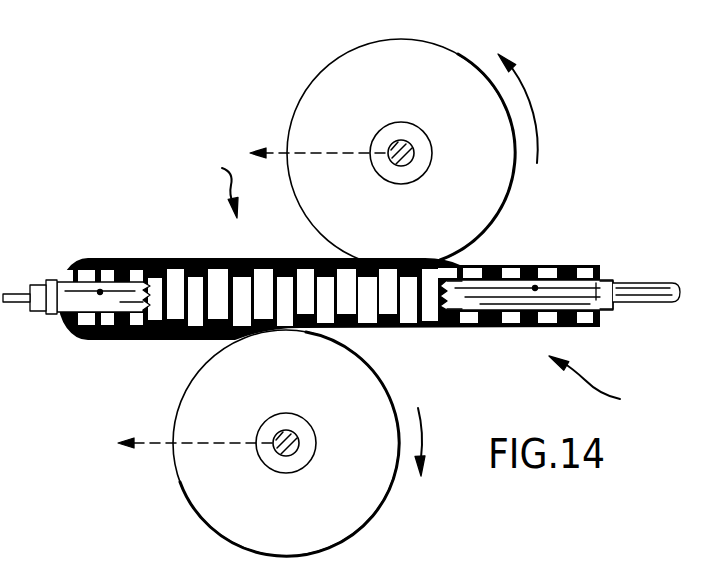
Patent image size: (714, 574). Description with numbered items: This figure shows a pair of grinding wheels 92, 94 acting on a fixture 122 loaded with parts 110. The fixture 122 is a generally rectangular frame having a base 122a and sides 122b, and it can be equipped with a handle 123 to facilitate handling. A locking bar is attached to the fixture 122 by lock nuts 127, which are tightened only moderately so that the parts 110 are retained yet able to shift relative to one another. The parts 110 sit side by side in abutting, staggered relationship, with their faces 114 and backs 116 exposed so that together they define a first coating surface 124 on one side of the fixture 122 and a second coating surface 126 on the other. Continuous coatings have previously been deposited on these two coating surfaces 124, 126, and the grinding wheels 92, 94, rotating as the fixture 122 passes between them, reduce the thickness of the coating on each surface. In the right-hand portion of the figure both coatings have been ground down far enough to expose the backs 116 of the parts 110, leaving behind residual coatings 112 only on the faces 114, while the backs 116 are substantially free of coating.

The grinding wheel 92 is at (405, 50).
The grinding wheel 94 is at (362, 502).
The part 110 is at (313, 328).
The residual coating 112 is at (196, 240).
The face 114 is at (468, 276).
The back 116 is at (589, 266).
The fixture 122 is at (100, 292).
The base 122a is at (614, 310).
The side 122b is at (475, 303).
The handle 123 is at (677, 283).
The first coating surface 124 is at (210, 181).
The second coating surface 126 is at (608, 387).
The lock nut 127 is at (7, 300).